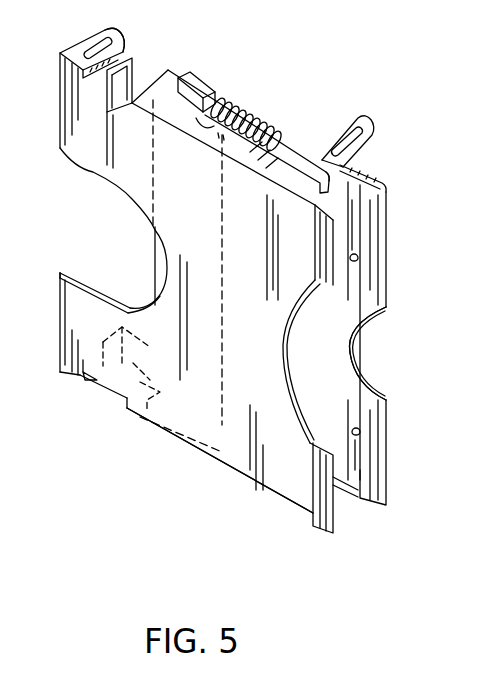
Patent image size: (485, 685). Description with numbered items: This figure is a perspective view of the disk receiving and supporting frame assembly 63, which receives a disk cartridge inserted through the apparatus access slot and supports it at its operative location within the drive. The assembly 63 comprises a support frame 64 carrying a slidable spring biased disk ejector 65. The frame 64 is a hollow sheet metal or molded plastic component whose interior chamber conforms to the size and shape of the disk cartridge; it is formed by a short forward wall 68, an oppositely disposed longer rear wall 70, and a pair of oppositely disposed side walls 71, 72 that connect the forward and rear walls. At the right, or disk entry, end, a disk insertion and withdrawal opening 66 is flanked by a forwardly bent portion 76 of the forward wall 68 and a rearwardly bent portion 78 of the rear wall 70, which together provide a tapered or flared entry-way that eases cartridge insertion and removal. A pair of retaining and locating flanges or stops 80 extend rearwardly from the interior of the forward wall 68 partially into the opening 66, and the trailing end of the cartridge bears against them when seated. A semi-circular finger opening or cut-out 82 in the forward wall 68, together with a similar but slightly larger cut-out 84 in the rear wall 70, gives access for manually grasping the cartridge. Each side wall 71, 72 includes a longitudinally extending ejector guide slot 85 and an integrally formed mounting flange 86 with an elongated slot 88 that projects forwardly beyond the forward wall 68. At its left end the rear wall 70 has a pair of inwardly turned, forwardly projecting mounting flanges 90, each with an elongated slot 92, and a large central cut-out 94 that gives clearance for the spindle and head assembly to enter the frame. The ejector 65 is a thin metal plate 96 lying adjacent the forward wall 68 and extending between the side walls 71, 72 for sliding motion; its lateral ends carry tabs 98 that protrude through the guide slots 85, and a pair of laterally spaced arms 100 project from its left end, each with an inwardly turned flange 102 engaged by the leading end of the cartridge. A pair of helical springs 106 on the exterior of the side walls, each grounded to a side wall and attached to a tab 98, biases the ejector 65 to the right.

The disk receiving and supporting frame assembly 63 is at (401, 98).
The support frame 64 is at (84, 46).
The slidable spring biased disk ejector 65 is at (140, 65).
The disk insertion and withdrawal opening 66 is at (354, 356).
The forward wall 68 is at (210, 94).
The rear wall 70 is at (202, 445).
The side wall 71 is at (294, 152).
The side wall 72 is at (306, 510).
The forwardly bent portion 76 is at (387, 277).
The rearwardly bent portion 78 is at (319, 517).
The disk cartridge retaining and locating flanges 80 is at (353, 264).
The semi-circular finger opening 82 is at (372, 376).
The cut-out 84 is at (305, 357).
The ejector guide slot 85 is at (199, 136).
The mounting flange 86 is at (366, 142).
The elongated slot 88 is at (343, 124).
The mounting flanges 90 is at (114, 38).
The elongated slot 92 is at (95, 33).
The central cut-out 94 is at (151, 287).
The thin metal plate 96 is at (152, 246).
The tabs 98 is at (191, 80).
The arms 100 is at (128, 70).
The inwardly turned flange 102 is at (116, 88).
The helical spring 106 is at (260, 124).